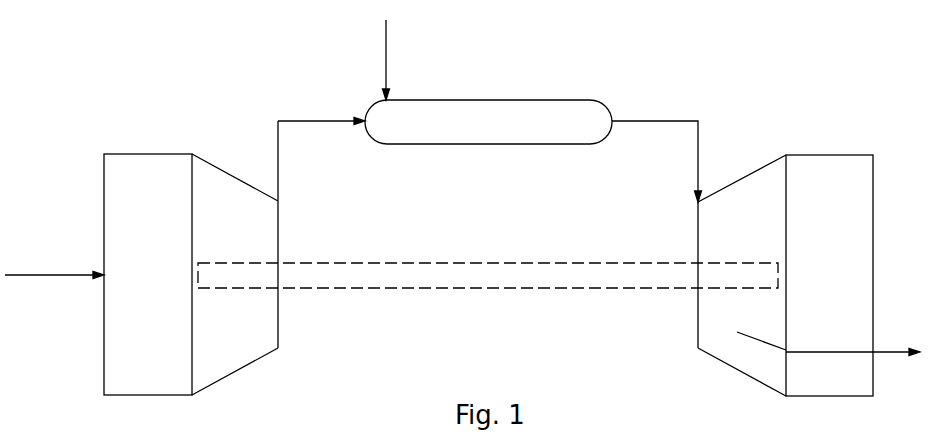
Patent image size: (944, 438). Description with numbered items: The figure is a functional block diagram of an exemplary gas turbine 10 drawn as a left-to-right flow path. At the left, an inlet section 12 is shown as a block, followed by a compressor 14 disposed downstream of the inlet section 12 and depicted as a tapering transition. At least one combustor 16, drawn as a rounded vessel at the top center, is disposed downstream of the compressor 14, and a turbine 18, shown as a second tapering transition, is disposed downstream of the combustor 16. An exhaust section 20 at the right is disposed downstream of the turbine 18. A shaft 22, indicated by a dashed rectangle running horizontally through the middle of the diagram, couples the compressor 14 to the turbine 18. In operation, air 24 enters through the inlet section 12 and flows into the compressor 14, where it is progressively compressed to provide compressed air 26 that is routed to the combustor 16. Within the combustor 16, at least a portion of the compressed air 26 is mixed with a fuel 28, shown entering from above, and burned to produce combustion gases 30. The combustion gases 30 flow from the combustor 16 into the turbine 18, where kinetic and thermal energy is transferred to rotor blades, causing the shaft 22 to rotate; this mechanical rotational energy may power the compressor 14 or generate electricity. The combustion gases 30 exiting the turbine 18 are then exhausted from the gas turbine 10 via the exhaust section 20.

The gas turbine 10 is at (333, 45).
The inlet section 12 is at (147, 152).
The compressor 14 is at (207, 163).
The combustor 16 is at (545, 100).
The turbine 18 is at (767, 162).
The exhaust section 20 is at (850, 152).
The shaft 22 is at (363, 277).
The air 24 is at (70, 273).
The compressed air 26 is at (313, 122).
The fuel 28 is at (392, 48).
The combustion gases 30 is at (640, 122).